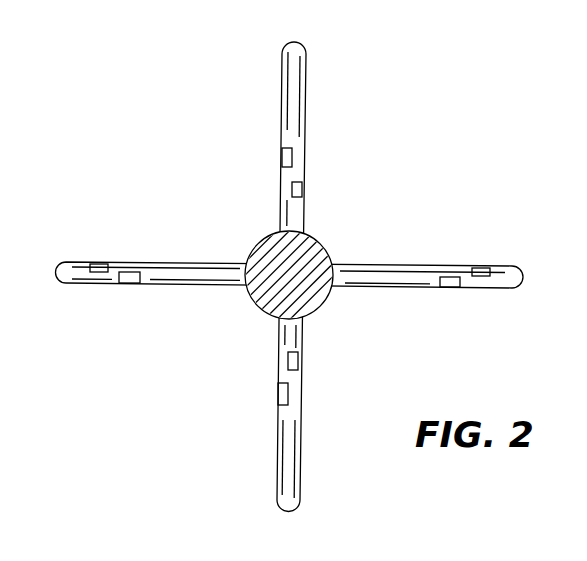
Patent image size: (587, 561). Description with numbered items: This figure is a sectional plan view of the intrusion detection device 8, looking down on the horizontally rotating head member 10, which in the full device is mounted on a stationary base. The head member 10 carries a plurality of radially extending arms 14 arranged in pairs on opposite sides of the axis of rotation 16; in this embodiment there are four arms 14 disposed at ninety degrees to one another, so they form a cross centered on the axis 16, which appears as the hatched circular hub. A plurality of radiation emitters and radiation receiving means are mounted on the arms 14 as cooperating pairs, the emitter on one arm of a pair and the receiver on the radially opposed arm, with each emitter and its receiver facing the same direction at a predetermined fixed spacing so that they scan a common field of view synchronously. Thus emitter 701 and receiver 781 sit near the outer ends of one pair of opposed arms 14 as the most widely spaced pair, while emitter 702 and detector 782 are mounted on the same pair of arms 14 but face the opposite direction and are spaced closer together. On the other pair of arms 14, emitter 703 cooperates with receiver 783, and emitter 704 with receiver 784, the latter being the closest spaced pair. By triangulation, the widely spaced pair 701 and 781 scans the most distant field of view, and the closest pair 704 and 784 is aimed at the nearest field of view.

The assembly 8 is at (217, 197).
The horizontally rotating head member 10 is at (272, 243).
The radially extending arms 14 is at (190, 266).
The axis of rotation 16 is at (286, 270).
The radiation emitter 701 is at (100, 264).
The radiation emitter 702 is at (130, 285).
The radiation emitter 703 is at (282, 157).
The radiation emitter 704 is at (302, 189).
The radiation receiving means 781 is at (484, 268).
The radiation receiving means 782 is at (445, 290).
The radiation receiving means 783 is at (279, 392).
The radiation receiving means 784 is at (298, 360).